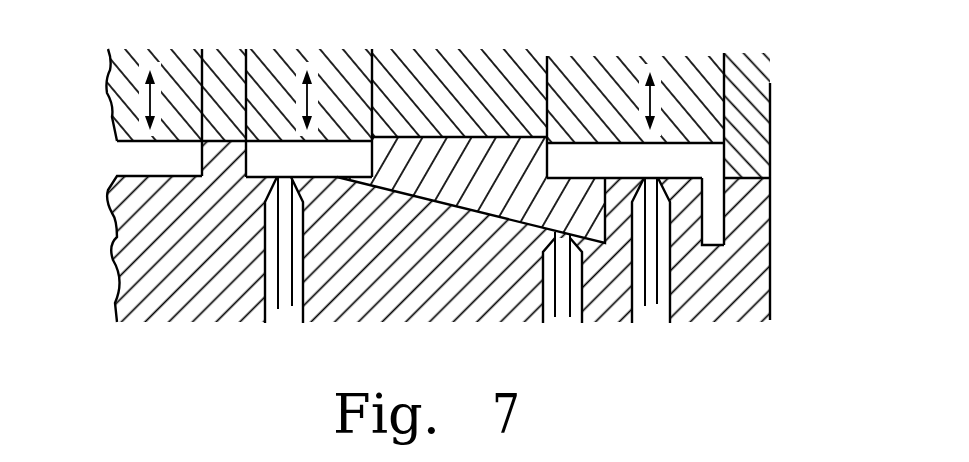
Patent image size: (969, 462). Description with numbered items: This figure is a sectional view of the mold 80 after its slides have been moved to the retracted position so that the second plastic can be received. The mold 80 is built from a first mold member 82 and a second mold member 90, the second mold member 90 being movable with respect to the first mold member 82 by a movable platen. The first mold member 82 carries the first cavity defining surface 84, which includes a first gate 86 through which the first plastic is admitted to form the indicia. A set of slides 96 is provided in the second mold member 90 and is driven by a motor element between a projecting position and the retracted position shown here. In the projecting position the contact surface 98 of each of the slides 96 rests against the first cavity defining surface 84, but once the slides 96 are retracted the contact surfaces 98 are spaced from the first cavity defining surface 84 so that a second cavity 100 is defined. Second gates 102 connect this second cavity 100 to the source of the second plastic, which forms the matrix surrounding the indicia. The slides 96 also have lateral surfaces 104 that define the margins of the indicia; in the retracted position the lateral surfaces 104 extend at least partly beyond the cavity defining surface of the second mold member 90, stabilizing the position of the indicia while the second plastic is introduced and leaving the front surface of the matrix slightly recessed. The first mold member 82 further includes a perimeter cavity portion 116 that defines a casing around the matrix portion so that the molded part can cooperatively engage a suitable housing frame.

The mold 80 is at (414, 326).
The first mold member 82 is at (750, 227).
The first cavity defining surface 84 is at (306, 170).
The first gate 86 is at (548, 320).
The second mold member 90 is at (770, 112).
The slides 96 is at (270, 53).
The contact surface 98 is at (128, 140).
The second cavity 100 is at (117, 170).
The second gates 102 is at (273, 322).
The lateral surfaces 104 is at (378, 127).
The perimeter cavity portion 116 is at (710, 205).